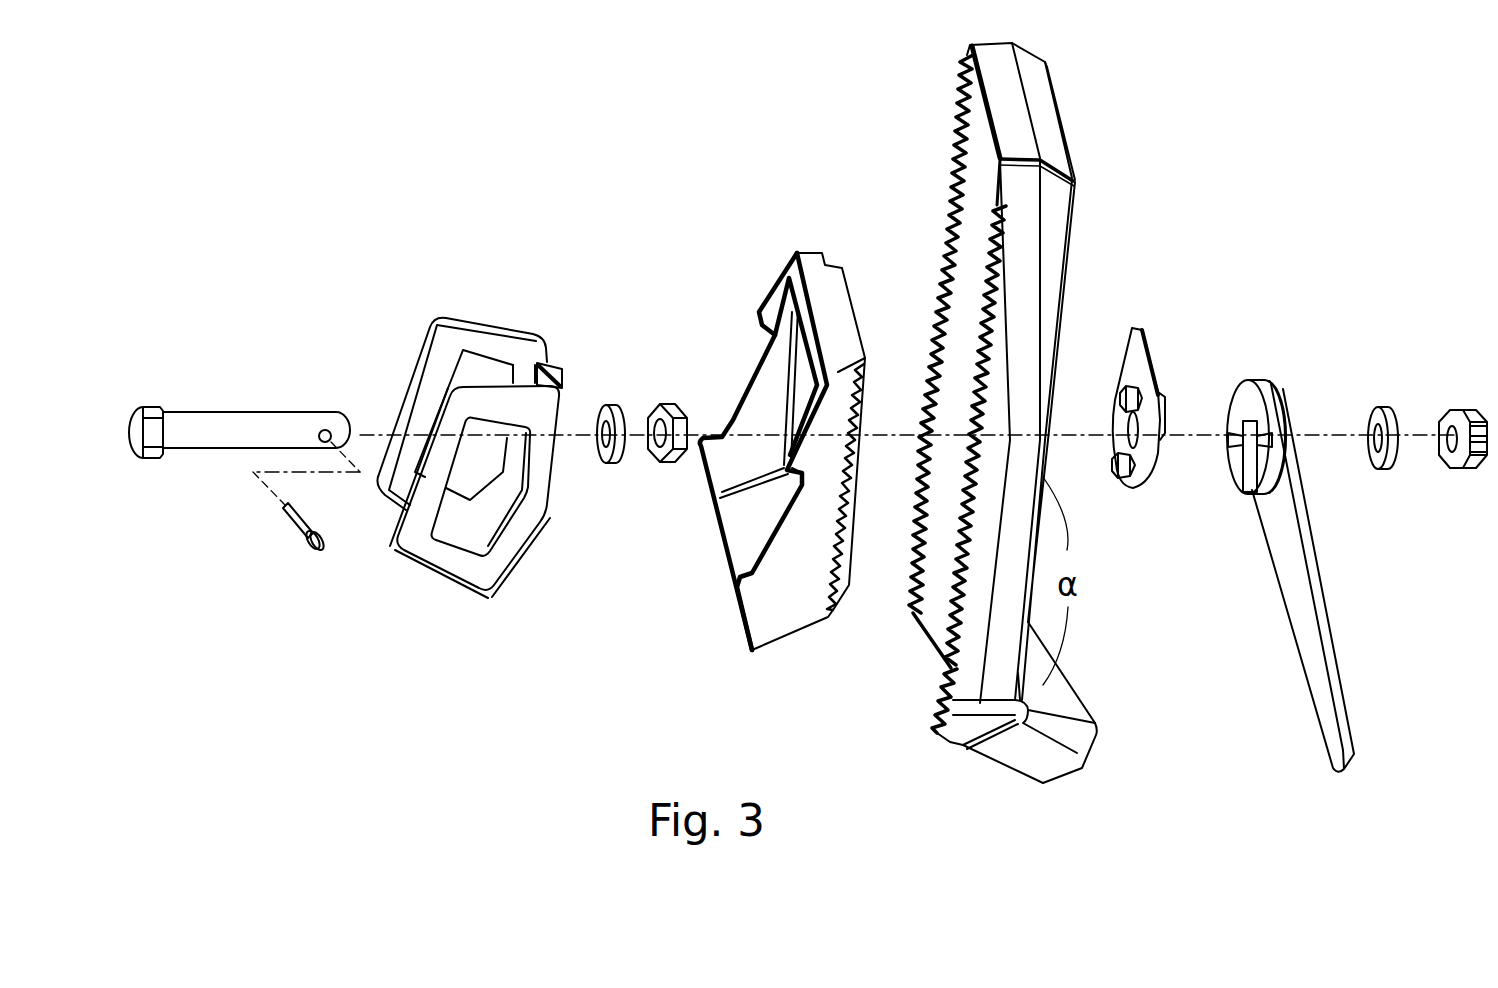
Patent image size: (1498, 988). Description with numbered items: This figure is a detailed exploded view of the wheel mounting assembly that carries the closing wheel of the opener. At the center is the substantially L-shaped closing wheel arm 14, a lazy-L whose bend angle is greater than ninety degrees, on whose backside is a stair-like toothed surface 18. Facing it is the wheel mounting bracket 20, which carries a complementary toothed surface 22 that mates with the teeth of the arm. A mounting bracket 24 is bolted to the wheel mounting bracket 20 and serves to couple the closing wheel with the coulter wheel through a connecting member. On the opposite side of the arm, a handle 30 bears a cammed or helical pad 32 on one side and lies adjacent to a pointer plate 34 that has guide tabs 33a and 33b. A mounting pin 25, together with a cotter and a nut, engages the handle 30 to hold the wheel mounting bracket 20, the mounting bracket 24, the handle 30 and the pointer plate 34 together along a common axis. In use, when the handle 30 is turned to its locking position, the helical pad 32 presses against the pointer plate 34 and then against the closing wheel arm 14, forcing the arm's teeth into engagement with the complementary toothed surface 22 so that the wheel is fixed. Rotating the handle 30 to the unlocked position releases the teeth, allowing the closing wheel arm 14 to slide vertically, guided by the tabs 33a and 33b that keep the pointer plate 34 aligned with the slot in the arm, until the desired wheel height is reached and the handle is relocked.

The closing wheel arm 14 is at (1024, 748).
The stair-like toothed surface 18 is at (952, 203).
The wheel mounting bracket 20 is at (768, 600).
The complementary toothed surface 22 is at (845, 570).
The mounting bracket 24 is at (497, 562).
The mounting pin 25 is at (247, 428).
The handle 30 is at (1323, 620).
The cammed or helical pad 32 is at (1253, 402).
The guide tab 33a is at (1118, 398).
The guide tab 33b is at (1113, 468).
The pointer plate 34 is at (1142, 345).